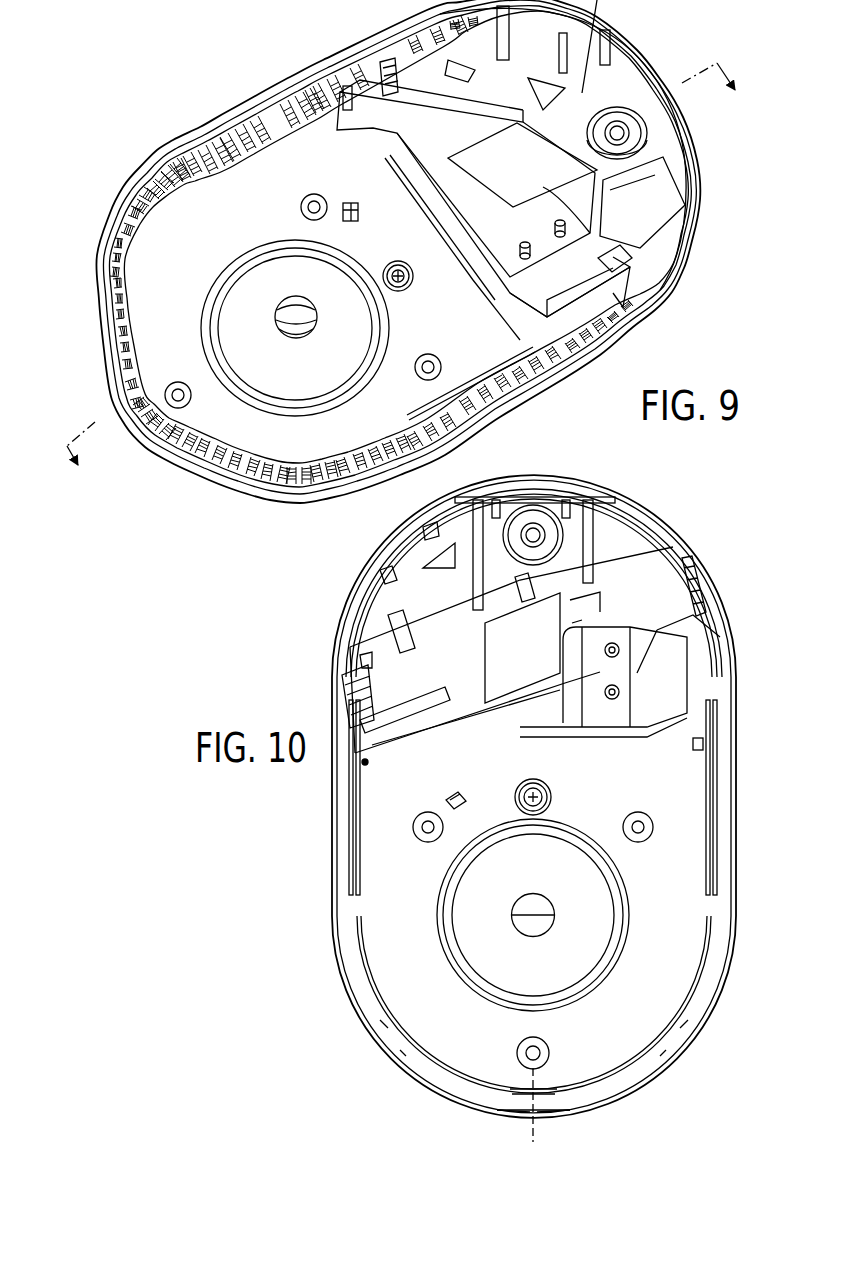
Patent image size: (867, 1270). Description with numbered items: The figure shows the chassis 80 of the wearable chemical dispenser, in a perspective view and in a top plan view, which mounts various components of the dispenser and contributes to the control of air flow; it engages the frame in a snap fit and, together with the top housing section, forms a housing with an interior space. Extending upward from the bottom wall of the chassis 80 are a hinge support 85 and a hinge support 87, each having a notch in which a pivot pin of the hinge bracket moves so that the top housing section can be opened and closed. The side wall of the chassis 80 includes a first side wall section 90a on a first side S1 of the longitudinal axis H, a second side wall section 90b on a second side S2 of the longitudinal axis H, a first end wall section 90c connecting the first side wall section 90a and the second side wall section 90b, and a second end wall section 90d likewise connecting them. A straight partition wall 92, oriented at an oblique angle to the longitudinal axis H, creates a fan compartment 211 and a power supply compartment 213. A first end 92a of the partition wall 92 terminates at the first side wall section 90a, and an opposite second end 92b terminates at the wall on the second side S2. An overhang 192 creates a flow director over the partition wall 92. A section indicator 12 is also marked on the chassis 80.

In FIG. 9, the chassis 80 is at (185, 520).
In FIG. 10, the chassis 80 is at (293, 1003).
In FIG. 9, the hinge support 85 is at (657, 173).
In FIG. 10, the hinge support 85 is at (588, 537).
In FIG. 10, the hinge support 87 is at (478, 548).
In FIG. 9, the first side wall section 90a is at (203, 137).
In FIG. 10, the first side wall section 90a is at (338, 855).
In FIG. 9, the second side wall section 90b is at (540, 383).
In FIG. 10, the second side wall section 90b is at (736, 830).
In FIG. 9, the first end wall section 90c is at (143, 422).
In FIG. 10, the first end wall section 90c is at (655, 1065).
In FIG. 9, the second end wall section 90d is at (650, 64).
In FIG. 10, the second end wall section 90d is at (536, 487).
In FIG. 9, the partition wall 92 is at (373, 128).
In FIG. 10, the partition wall 92 is at (405, 740).
In FIG. 9, the first end of the partition wall 92a is at (347, 88).
In FIG. 10, the first end of the partition wall 92a is at (370, 766).
In FIG. 9, the second end of the partition wall 92b is at (612, 273).
In FIG. 10, the second end of the partition wall 92b is at (716, 640).
In FIG. 9, the overhang 192 is at (563, 283).
In FIG. 10, the overhang 192 is at (663, 693).
In FIG. 9, the fan compartment 211 is at (303, 305).
In FIG. 10, the fan compartment 211 is at (665, 963).
In FIG. 10, the power supply compartment 213 is at (410, 600).
In FIG. 9, the section line 12 is at (407, 273).
In FIG. 10, the longitudinal axis H is at (533, 1117).
In FIG. 10, the first side S1 is at (510, 1127).
In FIG. 10, the second side S2 is at (560, 1127).